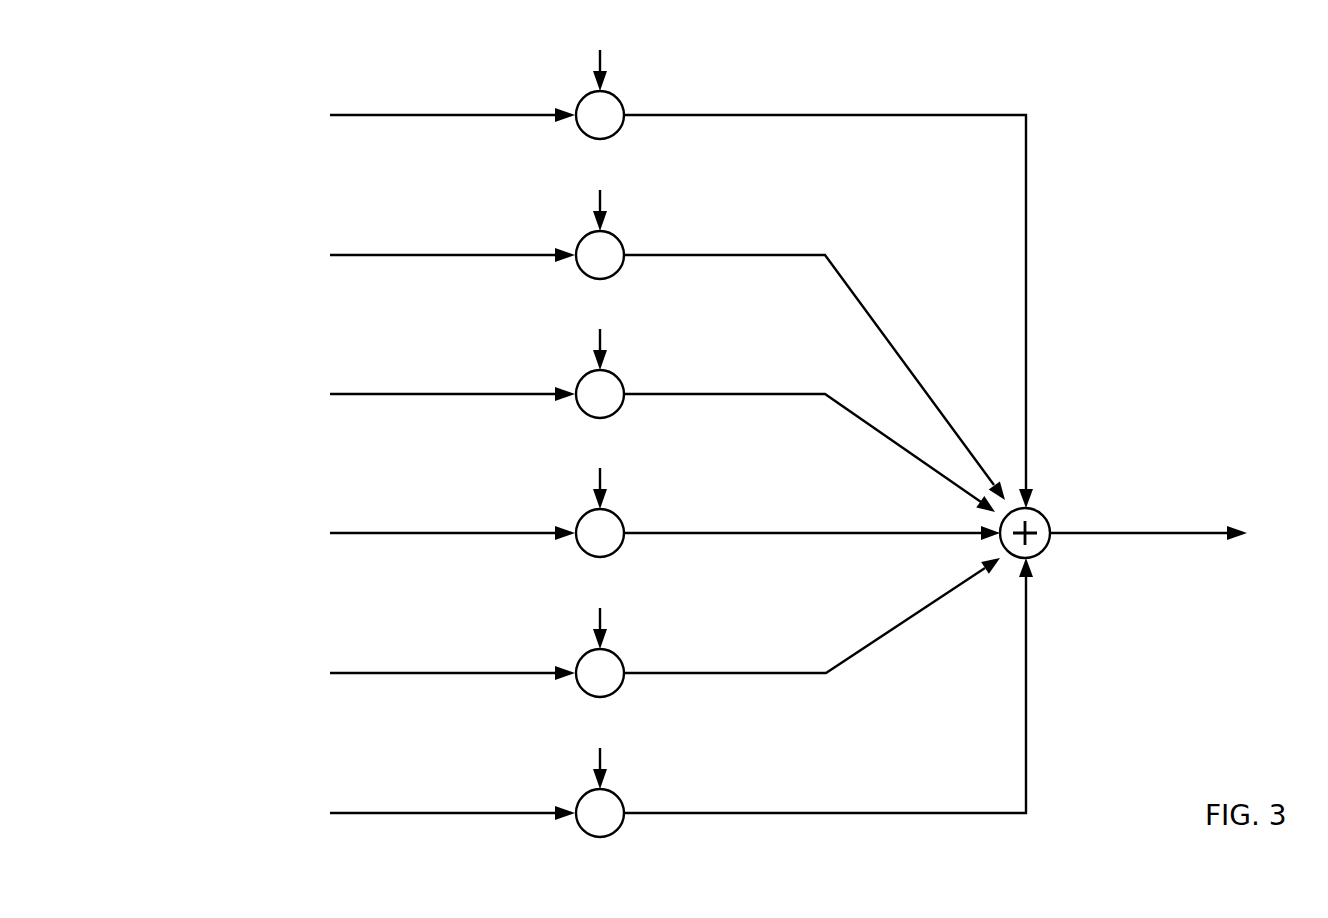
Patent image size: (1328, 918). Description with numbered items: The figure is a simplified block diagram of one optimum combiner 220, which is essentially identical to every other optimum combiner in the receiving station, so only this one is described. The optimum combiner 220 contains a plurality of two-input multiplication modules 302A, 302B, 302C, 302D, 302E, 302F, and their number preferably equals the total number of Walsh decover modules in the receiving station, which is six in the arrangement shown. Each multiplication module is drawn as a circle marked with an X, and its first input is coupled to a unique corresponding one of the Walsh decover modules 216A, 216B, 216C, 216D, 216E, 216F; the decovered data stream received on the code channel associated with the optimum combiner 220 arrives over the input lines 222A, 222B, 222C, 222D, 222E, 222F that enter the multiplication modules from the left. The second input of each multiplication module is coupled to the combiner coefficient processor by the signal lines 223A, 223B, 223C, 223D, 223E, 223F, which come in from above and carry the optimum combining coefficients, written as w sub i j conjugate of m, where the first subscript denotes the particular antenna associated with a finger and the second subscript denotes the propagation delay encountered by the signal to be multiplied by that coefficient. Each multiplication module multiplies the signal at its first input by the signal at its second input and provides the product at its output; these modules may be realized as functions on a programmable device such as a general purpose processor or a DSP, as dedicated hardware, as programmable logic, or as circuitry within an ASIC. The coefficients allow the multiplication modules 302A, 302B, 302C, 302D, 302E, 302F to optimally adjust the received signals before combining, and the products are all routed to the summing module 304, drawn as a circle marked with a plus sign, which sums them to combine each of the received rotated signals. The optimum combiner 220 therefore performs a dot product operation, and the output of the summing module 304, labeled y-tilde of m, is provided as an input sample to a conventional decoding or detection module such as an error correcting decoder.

The optimum combiner 220 is at (1137, 103).
The Walsh decover module 216A is at (235, 113).
The Walsh decover module 216B is at (235, 253).
The Walsh decover module 216C is at (235, 392).
The Walsh decover module 216D is at (235, 531).
The Walsh decover module 216E is at (235, 671).
The Walsh decover module 216F is at (235, 811).
The input signal line from Walsh decover 222A is at (388, 115).
The input signal line from Walsh decover 222B is at (388, 255).
The input signal line from Walsh decover 222C is at (388, 394).
The input signal line from Walsh decover 222D is at (388, 533).
The input signal line from Walsh decover 222E is at (388, 673).
The input signal line from Walsh decover 222F is at (388, 813).
The signal line 223A is at (600, 65).
The signal line 223B is at (600, 205).
The signal line 223C is at (600, 344).
The signal line 223D is at (600, 483).
The signal line 223E is at (600, 623).
The signal line 223F is at (600, 763).
The multiplication module 302A is at (618, 98).
The multiplication module 302B is at (618, 238).
The multiplication module 302C is at (618, 377).
The multiplication module 302D is at (618, 516).
The multiplication module 302E is at (618, 656).
The multiplication module 302F is at (618, 796).
The summing module 304 is at (1043, 517).